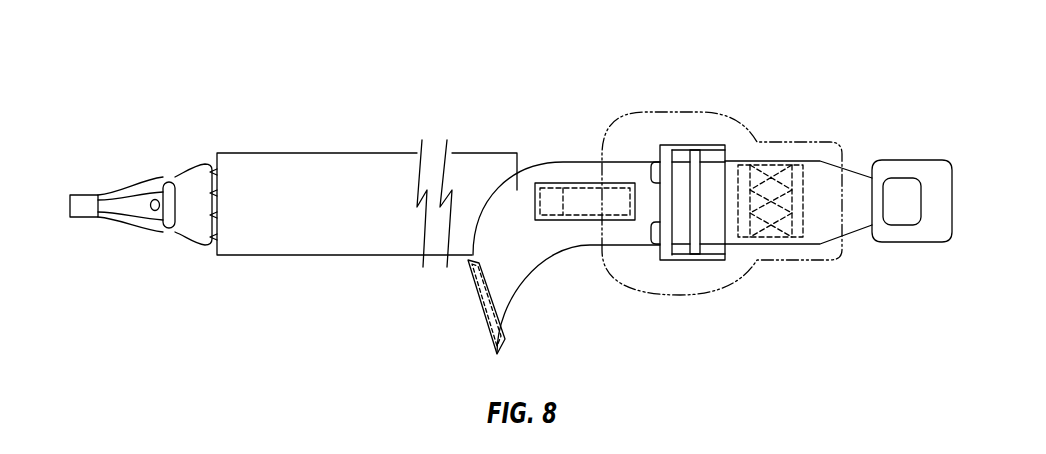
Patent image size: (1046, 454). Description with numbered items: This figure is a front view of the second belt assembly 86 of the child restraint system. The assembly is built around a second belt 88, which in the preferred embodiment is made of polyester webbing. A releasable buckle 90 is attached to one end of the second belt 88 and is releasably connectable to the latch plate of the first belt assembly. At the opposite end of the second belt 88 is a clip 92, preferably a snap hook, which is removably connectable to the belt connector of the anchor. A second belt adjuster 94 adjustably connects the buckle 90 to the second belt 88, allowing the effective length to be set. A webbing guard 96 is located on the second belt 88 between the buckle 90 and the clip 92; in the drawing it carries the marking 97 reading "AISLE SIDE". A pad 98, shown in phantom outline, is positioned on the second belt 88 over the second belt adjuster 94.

The second belt assembly 86 is at (592, 62).
The second belt 88 is at (535, 162).
The releasable buckle 90 is at (888, 158).
The clip 92 is at (138, 223).
The second belt adjuster 94 is at (713, 260).
The webbing guard 96 is at (355, 255).
The aisle side label 97 is at (315, 182).
The pad 98 is at (683, 108).